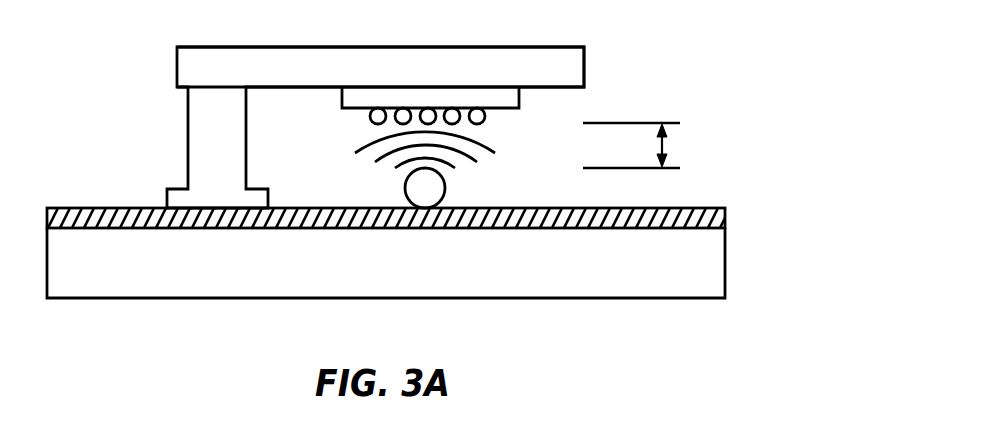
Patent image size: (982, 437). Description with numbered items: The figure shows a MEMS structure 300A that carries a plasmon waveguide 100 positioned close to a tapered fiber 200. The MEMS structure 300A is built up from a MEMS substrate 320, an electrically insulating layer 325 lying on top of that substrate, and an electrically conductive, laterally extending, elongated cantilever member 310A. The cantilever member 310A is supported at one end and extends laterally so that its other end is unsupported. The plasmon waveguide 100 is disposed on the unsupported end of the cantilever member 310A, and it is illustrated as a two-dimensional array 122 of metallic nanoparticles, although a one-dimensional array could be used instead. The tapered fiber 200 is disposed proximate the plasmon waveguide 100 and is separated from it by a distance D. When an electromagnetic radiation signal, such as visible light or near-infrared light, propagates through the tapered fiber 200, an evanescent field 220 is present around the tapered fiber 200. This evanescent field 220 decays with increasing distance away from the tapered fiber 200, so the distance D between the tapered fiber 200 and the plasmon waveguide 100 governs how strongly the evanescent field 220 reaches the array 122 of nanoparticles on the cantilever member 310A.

The MEMS structure 300A is at (156, 58).
The cantilever member 310A is at (353, 47).
The plasmon waveguide 100 is at (342, 101).
The two-dimensional array 122 is at (366, 121).
The evanescent field 220 is at (493, 153).
The tapered fiber 200 is at (445, 192).
The distance D is at (663, 142).
The electrically insulating layer 325 is at (725, 215).
The MEMS substrate 320 is at (725, 267).